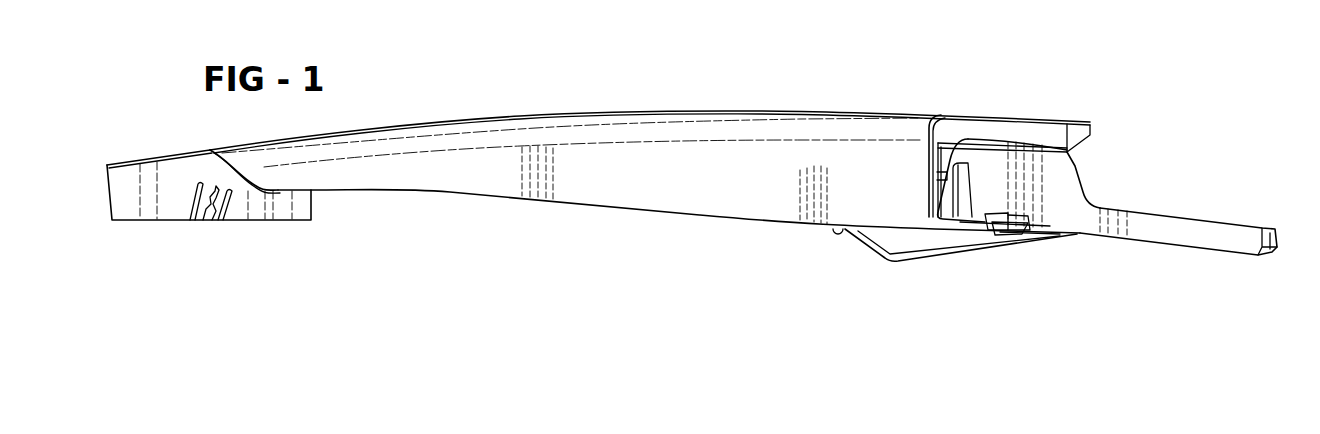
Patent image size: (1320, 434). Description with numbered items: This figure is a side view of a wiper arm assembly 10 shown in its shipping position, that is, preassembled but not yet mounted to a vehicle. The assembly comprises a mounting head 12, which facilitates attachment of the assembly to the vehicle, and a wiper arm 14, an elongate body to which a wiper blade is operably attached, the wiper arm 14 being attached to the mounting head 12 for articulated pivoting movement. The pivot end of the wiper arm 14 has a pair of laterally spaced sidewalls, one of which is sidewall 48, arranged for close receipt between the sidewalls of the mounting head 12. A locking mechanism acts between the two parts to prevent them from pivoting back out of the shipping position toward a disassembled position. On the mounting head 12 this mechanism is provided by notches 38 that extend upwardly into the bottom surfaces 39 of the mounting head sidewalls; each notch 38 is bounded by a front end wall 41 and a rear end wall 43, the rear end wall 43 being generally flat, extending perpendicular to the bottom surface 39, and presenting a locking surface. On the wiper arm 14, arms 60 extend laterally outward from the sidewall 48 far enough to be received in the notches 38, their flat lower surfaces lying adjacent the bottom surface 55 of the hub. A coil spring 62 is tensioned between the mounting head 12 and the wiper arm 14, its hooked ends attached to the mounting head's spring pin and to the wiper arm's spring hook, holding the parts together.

The wiper arm assembly 10 is at (868, 80).
The mounting head 12 is at (1205, 218).
The wiper arm 14 is at (791, 108).
The notches 38 is at (981, 225).
The bottom surfaces 39 is at (950, 233).
The front end walls 41 is at (991, 230).
The rear end walls 43 is at (1008, 228).
The sidewall 48 is at (760, 200).
The bottom surface 55 is at (975, 236).
The arms 60 is at (1005, 218).
The coil spring 62 is at (868, 248).